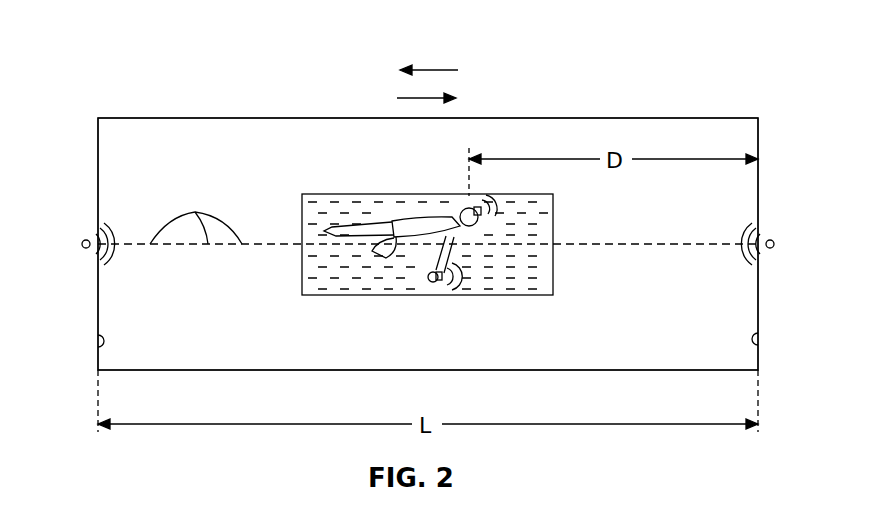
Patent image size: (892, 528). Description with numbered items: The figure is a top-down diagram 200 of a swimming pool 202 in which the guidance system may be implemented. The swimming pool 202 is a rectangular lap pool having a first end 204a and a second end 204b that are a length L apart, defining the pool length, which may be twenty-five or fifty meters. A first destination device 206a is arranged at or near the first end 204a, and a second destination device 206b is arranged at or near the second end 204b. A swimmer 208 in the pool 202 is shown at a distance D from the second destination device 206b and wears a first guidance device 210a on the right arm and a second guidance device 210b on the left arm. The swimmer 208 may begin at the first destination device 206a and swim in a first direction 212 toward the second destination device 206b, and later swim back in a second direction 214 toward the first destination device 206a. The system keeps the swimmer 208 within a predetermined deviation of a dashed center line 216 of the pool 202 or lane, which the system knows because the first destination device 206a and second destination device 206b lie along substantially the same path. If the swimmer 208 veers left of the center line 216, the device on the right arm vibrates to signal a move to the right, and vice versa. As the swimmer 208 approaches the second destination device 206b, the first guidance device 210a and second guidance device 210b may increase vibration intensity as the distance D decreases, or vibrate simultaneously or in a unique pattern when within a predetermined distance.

The diagram 200 is at (120, 82).
The swimming pool 202 is at (98, 148).
The first end 204a is at (98, 352).
The second end 204b is at (758, 348).
The first destination device 206a is at (86, 249).
The second destination device 206b is at (772, 249).
The swimmer 208 is at (356, 204).
The first guidance device 210a is at (432, 282).
The second guidance device 210b is at (478, 224).
The first direction 212 is at (414, 98).
The second direction 214 is at (432, 70).
The center line 216 is at (196, 215).